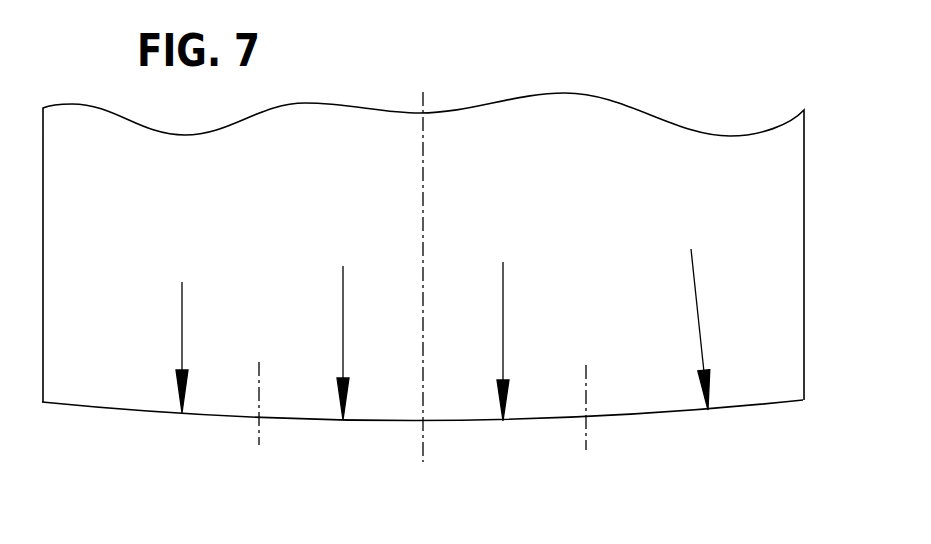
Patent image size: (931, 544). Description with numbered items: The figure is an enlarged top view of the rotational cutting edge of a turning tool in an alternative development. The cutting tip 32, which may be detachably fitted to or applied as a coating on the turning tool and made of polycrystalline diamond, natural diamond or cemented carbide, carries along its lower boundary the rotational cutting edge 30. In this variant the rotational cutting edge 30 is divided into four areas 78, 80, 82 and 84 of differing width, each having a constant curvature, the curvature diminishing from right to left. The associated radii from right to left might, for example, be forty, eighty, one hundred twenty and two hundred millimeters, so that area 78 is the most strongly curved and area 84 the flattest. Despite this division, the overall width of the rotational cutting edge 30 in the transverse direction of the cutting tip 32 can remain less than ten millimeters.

The cutting tip 32 is at (505, 173).
The rotational cutting edge 30 is at (449, 440).
The area of the rotational cutting edge 78 is at (661, 415).
The area of the rotational cutting edge 80 is at (524, 422).
The area of the rotational cutting edge 82 is at (357, 420).
The area of the rotational cutting edge 84 is at (160, 412).